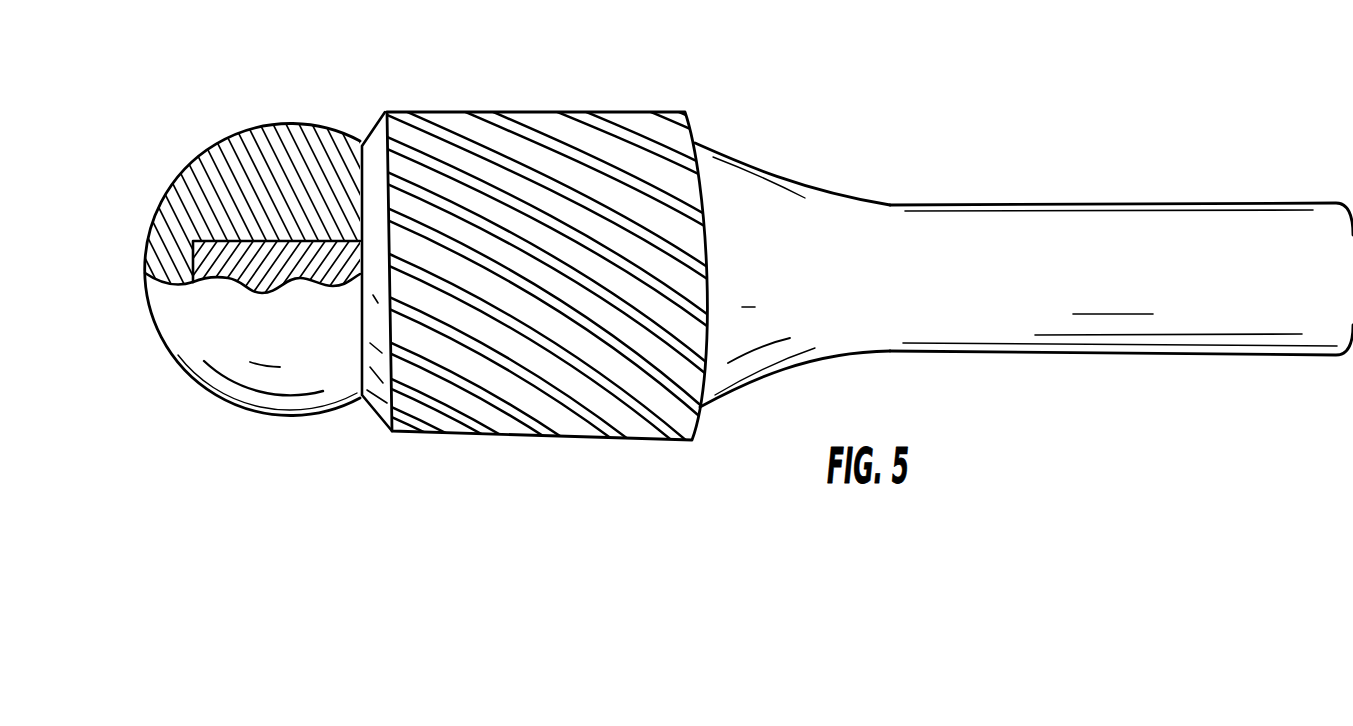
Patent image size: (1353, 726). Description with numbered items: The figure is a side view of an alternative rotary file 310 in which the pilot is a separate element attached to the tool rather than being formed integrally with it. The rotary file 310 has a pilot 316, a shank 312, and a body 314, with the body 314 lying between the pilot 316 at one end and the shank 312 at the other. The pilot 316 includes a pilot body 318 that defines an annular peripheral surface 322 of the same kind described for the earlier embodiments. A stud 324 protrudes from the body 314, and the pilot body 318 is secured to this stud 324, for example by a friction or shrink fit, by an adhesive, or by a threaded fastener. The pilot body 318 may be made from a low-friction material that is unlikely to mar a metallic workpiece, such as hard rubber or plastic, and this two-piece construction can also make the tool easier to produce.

The rotary file 310 is at (635, 97).
The shank 312 is at (975, 205).
The body 314 is at (582, 428).
The pilot 316 is at (274, 440).
The pilot body 318 is at (152, 230).
The annular peripheral surface 322 is at (282, 123).
The stud 324 is at (200, 262).